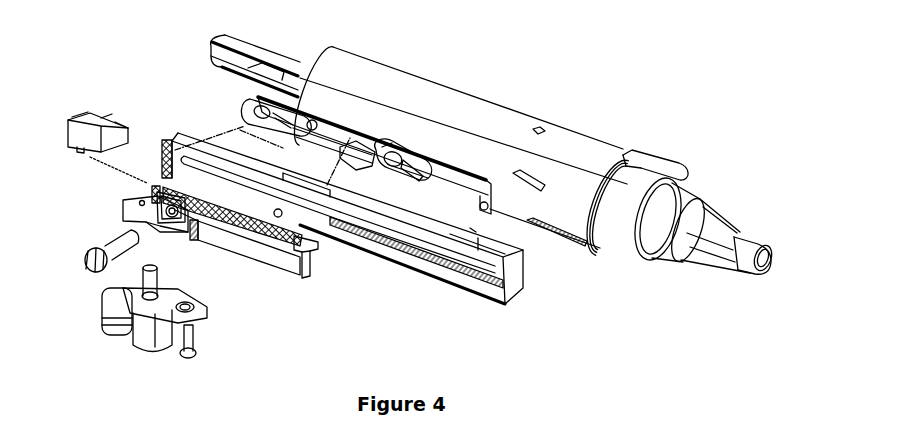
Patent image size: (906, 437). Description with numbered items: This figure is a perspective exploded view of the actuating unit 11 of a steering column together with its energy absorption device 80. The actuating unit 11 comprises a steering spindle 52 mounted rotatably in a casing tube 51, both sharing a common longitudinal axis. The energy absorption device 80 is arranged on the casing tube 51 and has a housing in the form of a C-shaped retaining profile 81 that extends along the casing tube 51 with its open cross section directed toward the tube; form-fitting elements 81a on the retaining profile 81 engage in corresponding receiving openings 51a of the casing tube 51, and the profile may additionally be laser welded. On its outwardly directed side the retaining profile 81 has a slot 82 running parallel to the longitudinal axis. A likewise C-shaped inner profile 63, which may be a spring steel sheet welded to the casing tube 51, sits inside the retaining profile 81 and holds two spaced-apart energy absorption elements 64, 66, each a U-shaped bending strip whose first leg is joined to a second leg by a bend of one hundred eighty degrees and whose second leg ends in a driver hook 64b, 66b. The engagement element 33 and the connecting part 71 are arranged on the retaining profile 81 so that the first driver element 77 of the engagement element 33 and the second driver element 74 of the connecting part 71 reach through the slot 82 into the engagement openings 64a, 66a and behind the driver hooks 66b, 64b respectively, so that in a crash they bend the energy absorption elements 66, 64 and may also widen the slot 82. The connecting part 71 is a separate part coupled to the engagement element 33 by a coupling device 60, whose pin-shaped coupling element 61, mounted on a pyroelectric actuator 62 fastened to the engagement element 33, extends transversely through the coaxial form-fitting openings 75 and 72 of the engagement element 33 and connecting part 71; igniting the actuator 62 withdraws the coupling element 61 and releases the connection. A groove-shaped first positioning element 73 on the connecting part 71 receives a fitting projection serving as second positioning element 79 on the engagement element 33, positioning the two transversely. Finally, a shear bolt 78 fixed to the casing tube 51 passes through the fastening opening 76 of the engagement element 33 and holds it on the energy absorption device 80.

The actuating unit 11 is at (587, 157).
The casing tube 51 is at (557, 143).
The receiving openings 51a is at (545, 198).
The steering spindle 52 is at (670, 213).
The inner profile 63 is at (477, 170).
The energy absorption element 64 is at (330, 122).
The engagement opening 64a is at (272, 80).
The driver hook 64b is at (282, 114).
The energy absorption element 66 is at (447, 180).
The engagement opening 66a is at (388, 145).
The driver hook 66b is at (412, 150).
The connecting part 71 is at (78, 140).
The form-fitting opening 72 is at (83, 113).
The first positioning element 73 is at (110, 118).
The second driver element 74 is at (121, 126).
The form-fitting opening 75 is at (125, 204).
The fastening opening 76 is at (173, 224).
The first driver element 77 is at (313, 253).
The shear bolt 78 is at (106, 252).
The second positioning element 79 is at (157, 175).
The engagement element 33 is at (237, 243).
The coupling device 60 is at (104, 341).
The coupling element 61 is at (143, 278).
The pyroelectric actuator 62 is at (152, 332).
The energy absorption device 80 is at (378, 270).
The retaining profile 81 is at (516, 290).
The form-fitting elements 81a is at (524, 253).
The slot 82 is at (444, 262).